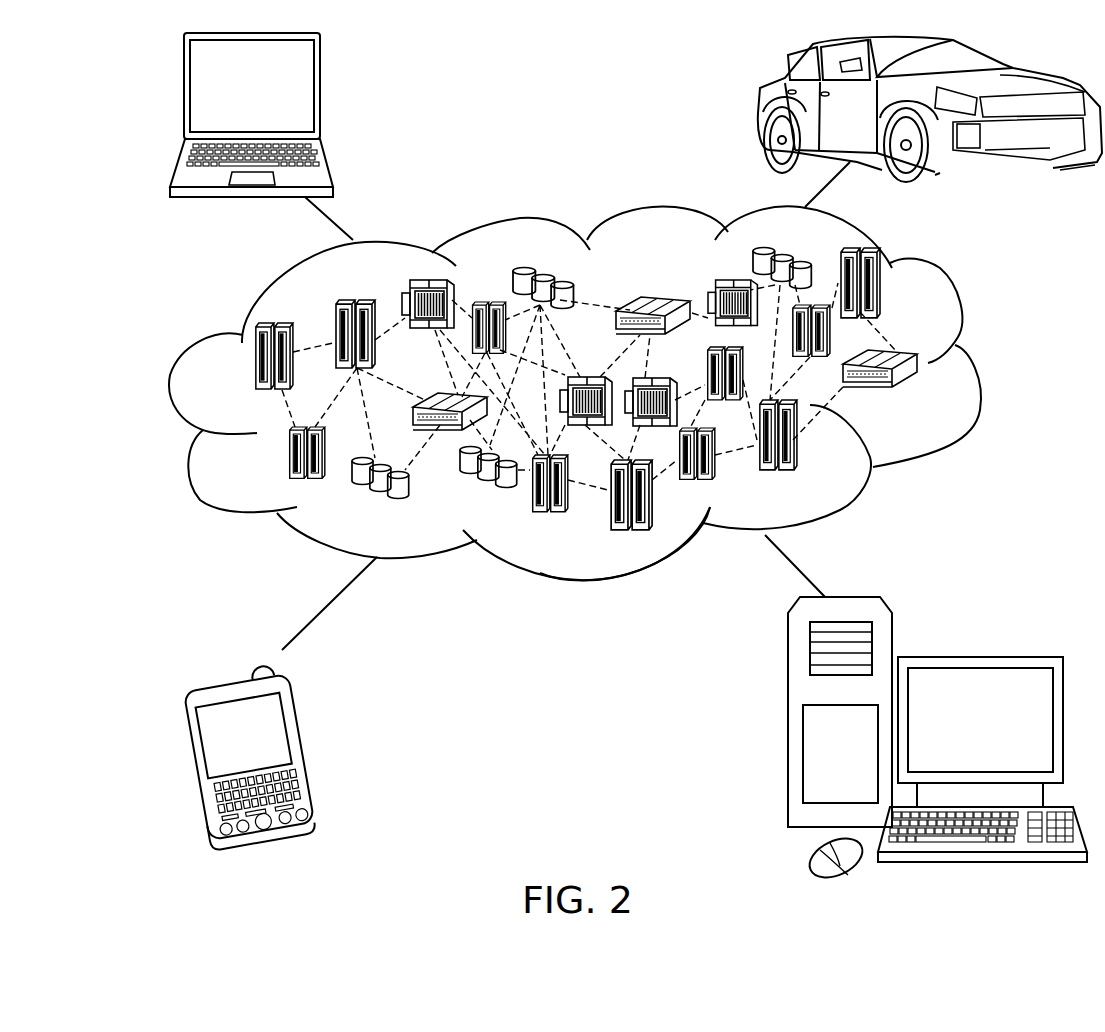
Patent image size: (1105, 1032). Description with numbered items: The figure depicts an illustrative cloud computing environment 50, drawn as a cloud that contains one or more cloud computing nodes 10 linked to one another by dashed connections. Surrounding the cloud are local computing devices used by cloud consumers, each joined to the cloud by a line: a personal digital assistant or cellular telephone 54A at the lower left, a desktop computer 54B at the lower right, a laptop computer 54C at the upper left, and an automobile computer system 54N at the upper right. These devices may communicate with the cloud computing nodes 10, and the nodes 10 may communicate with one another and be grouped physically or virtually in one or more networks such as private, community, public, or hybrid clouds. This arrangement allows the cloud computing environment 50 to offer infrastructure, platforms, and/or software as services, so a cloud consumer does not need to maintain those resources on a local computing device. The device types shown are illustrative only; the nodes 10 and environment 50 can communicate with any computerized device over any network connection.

The cloud computing nodes 10 is at (912, 410).
The cloud computing environment 50 is at (977, 365).
The personal digital assistant or cellular telephone 54A is at (315, 747).
The desktop computer 54B is at (977, 655).
The laptop computer 54C is at (320, 92).
The automobile computer system 54N is at (760, 108).